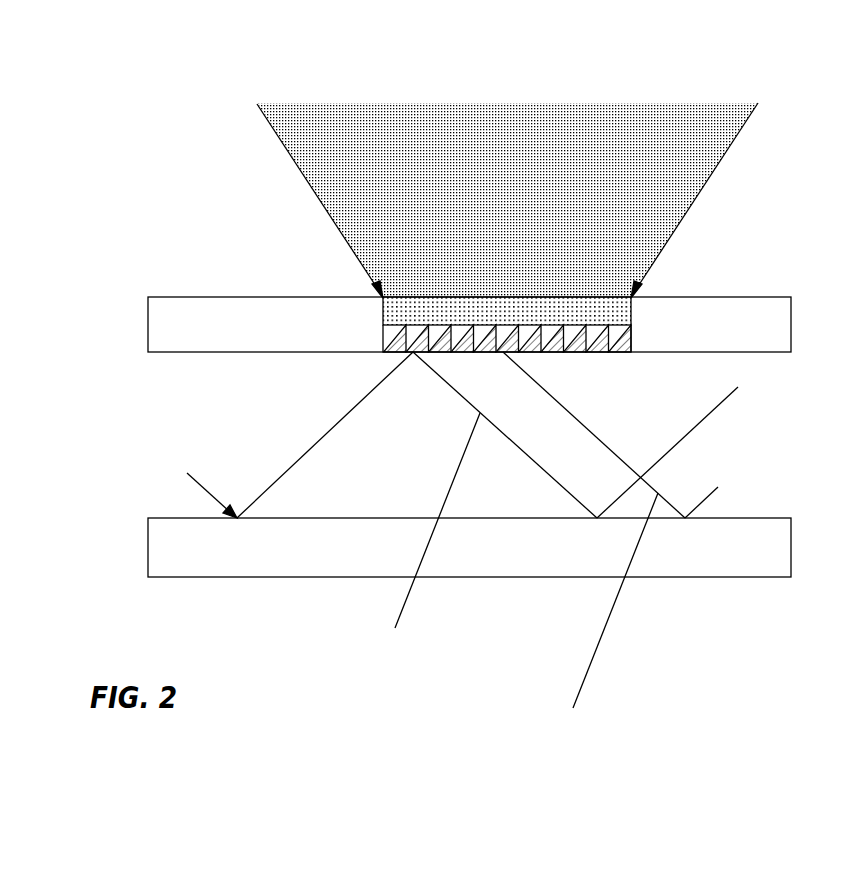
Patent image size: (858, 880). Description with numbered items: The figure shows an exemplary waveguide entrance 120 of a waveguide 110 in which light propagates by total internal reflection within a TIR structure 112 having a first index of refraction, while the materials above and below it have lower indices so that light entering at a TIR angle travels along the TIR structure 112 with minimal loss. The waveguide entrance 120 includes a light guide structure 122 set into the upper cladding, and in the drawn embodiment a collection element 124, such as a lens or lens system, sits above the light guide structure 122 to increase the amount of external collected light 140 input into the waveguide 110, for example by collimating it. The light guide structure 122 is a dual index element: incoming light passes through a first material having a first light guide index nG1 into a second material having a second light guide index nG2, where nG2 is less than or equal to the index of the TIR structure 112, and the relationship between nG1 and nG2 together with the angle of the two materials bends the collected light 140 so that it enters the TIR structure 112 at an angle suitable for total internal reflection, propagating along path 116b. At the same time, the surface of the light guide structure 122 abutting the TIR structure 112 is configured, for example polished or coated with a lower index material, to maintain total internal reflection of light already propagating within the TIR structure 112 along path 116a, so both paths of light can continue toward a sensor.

The waveguide 110 is at (768, 297).
The TIR structure 112 is at (160, 442).
The path of light already propagating within the TIR structure 116a is at (427, 537).
The path of collected light entering the TIR structure 116b is at (605, 616).
The waveguide entrance 120 is at (278, 336).
The light guide structure 122 is at (577, 352).
The collection element 124 is at (578, 297).
The collected light 140 is at (608, 88).
The first light guide index nG1 is at (615, 337).
The second light guide index nG2 is at (622, 352).